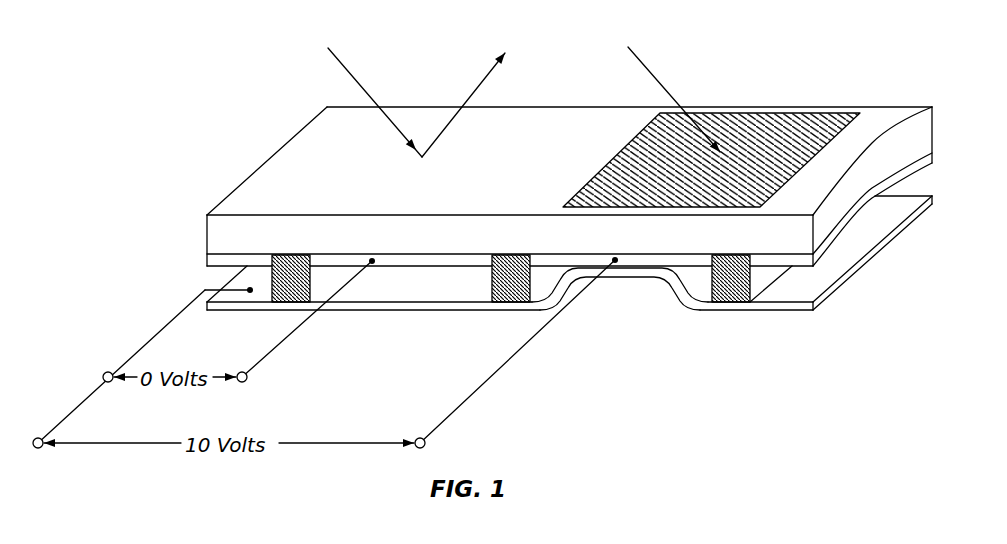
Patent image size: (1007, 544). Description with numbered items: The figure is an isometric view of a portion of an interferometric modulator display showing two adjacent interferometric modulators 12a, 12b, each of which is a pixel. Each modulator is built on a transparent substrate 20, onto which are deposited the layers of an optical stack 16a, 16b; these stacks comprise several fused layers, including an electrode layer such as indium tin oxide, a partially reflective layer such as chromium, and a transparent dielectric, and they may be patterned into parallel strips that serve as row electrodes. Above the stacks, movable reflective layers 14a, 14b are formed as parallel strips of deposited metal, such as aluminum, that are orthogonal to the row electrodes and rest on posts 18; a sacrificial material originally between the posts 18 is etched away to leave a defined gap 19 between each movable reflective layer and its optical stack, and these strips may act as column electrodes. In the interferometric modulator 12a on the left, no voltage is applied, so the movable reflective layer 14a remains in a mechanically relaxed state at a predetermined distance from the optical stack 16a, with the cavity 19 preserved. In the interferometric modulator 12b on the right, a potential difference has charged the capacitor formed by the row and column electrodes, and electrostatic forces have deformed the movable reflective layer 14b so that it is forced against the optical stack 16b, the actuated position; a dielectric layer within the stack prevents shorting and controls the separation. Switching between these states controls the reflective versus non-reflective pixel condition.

The interferometric modulator 12a is at (322, 173).
The interferometric modulator 12b is at (775, 137).
The movable reflective layer 14a is at (328, 305).
The movable reflective layer 14b is at (560, 287).
The optical stack 16a is at (397, 260).
The optical stack 16b is at (592, 260).
The posts 18 is at (293, 297).
The gap 19 is at (442, 287).
The transparent substrate 20 is at (858, 177).